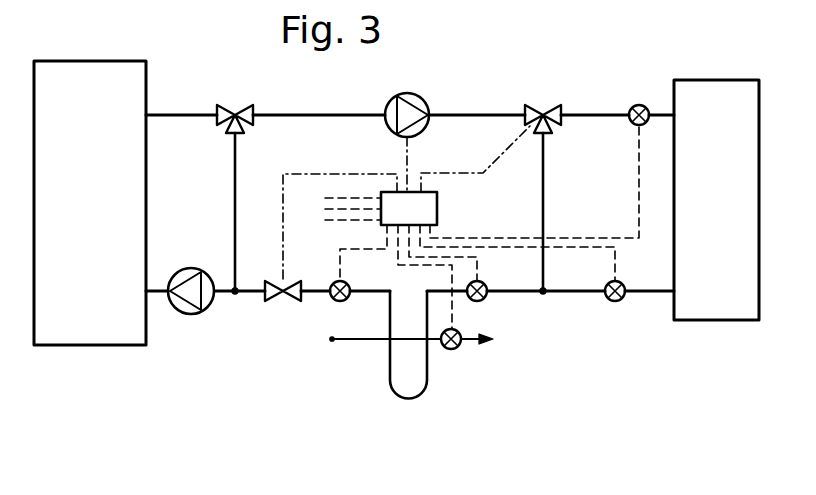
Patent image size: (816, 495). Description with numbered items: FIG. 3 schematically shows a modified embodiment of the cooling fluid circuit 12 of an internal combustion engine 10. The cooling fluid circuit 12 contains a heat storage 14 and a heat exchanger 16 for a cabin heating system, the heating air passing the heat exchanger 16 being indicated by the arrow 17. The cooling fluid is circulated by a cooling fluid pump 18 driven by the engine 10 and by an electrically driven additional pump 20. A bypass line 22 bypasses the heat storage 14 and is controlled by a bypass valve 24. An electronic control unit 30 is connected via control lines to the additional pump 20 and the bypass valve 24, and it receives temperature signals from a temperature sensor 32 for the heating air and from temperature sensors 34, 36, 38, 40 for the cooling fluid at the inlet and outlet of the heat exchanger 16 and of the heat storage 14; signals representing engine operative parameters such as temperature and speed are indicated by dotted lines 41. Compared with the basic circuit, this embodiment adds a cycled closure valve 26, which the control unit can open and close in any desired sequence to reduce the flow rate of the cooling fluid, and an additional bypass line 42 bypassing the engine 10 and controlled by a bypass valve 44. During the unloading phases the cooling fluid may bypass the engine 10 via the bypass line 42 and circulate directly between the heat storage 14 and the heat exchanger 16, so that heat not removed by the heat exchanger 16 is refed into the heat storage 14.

The internal combustion engine 10 is at (120, 345).
The cooling fluid circuit 12 is at (477, 115).
The heat storage 14 is at (735, 80).
The heat exchanger 16 is at (405, 400).
The arrow indicating heating air 17 is at (366, 342).
The cooling fluid pump 18 is at (187, 314).
The additional pump 20 is at (421, 95).
The bypass line 22 is at (543, 187).
The bypass valve 24 is at (551, 105).
The cycled closure valve 26 is at (279, 300).
The electronic control unit 30 is at (437, 205).
The temperature sensor 32 is at (458, 348).
The temperature sensor 34 is at (482, 299).
The temperature sensor 36 is at (338, 301).
The temperature sensor 38 is at (639, 105).
The temperature sensor 40 is at (619, 300).
The dotted lines 41 is at (360, 220).
The additional bypass line 42 is at (235, 193).
The bypass valve 44 is at (242, 104).